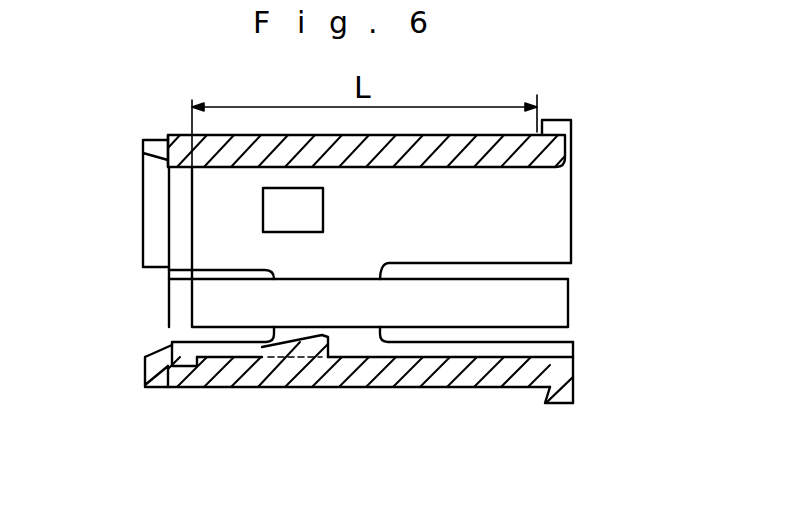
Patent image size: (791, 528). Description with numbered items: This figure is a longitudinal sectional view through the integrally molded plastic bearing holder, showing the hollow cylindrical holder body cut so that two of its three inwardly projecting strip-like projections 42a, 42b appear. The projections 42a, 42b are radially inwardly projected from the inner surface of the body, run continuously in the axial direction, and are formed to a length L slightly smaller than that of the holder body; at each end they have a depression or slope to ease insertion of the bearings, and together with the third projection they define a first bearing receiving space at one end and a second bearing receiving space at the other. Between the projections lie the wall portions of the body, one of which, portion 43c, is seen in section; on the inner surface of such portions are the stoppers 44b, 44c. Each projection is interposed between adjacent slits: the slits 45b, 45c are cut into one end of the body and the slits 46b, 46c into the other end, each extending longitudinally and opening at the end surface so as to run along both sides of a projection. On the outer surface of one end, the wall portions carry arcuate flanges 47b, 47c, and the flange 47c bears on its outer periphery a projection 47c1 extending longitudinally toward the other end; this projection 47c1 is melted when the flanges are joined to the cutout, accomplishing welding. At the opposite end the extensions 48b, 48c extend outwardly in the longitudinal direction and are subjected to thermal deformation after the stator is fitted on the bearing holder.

The strip-like projection 42a is at (355, 170).
The strip-like projection 42b is at (553, 303).
The portion of cylindrical holder body 43c is at (482, 378).
The stopper 44b is at (272, 218).
The stopper 44c is at (293, 350).
The slit 45b is at (557, 270).
The slit 45c is at (550, 333).
The slit 46b is at (178, 277).
The slit 46c is at (190, 338).
The arcuate flange 47b is at (563, 117).
The arcuate flange 47c is at (562, 403).
The projection 47c1 is at (545, 405).
The extension 48b is at (143, 195).
The extension 48c is at (157, 390).